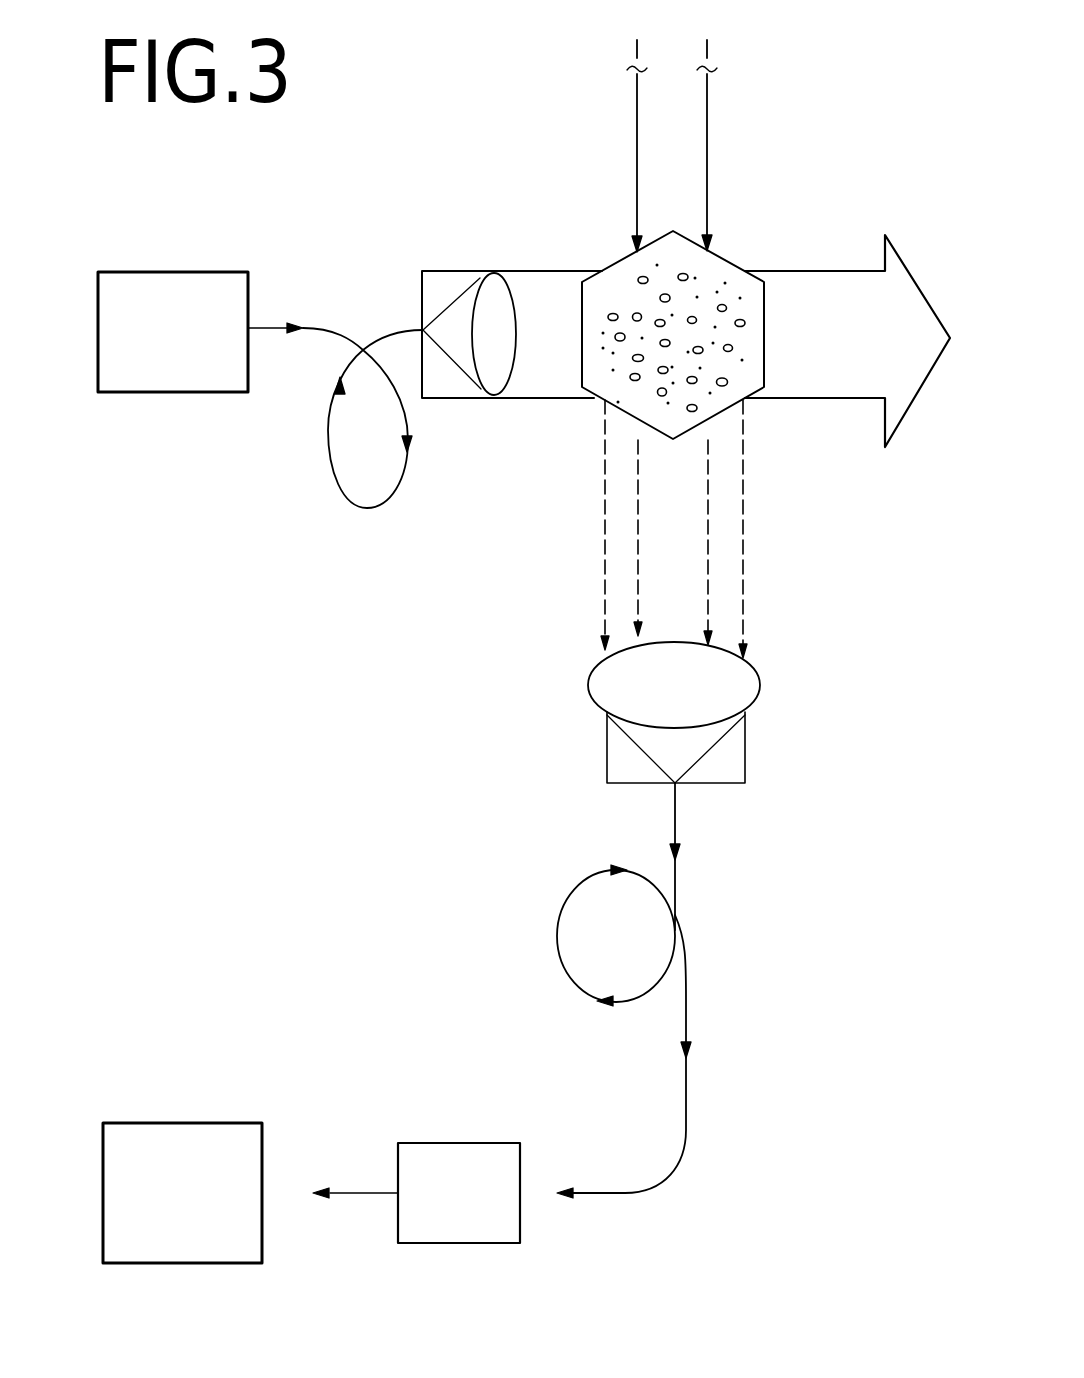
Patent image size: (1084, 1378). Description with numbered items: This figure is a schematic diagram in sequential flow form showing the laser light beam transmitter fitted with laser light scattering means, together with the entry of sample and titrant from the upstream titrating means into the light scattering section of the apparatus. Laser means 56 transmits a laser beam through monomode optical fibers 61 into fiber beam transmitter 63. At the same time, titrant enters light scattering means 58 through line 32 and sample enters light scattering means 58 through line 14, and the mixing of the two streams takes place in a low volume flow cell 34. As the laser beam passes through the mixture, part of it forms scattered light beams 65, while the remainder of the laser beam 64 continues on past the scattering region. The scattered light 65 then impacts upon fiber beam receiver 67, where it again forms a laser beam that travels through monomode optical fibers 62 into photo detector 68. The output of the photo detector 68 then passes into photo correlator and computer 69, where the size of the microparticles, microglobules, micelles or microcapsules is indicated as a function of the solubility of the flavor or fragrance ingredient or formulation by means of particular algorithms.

The line 14 is at (637, 137).
The line 32 is at (708, 140).
The low volume flow cell 34 is at (739, 252).
The light scattering means 58 is at (630, 303).
The laser means 56 is at (205, 348).
The monomode optical fibers 61 is at (359, 532).
The monomode optical fibers 62 is at (534, 931).
The fiber beam transmitter 63 is at (494, 358).
The remainder of the laser beam 64 is at (866, 357).
The scattered light beams 65 is at (760, 589).
The fiber beam receiver 67 is at (755, 788).
The photo detector 68 is at (490, 1212).
The photo correlator and computer 69 is at (203, 1217).